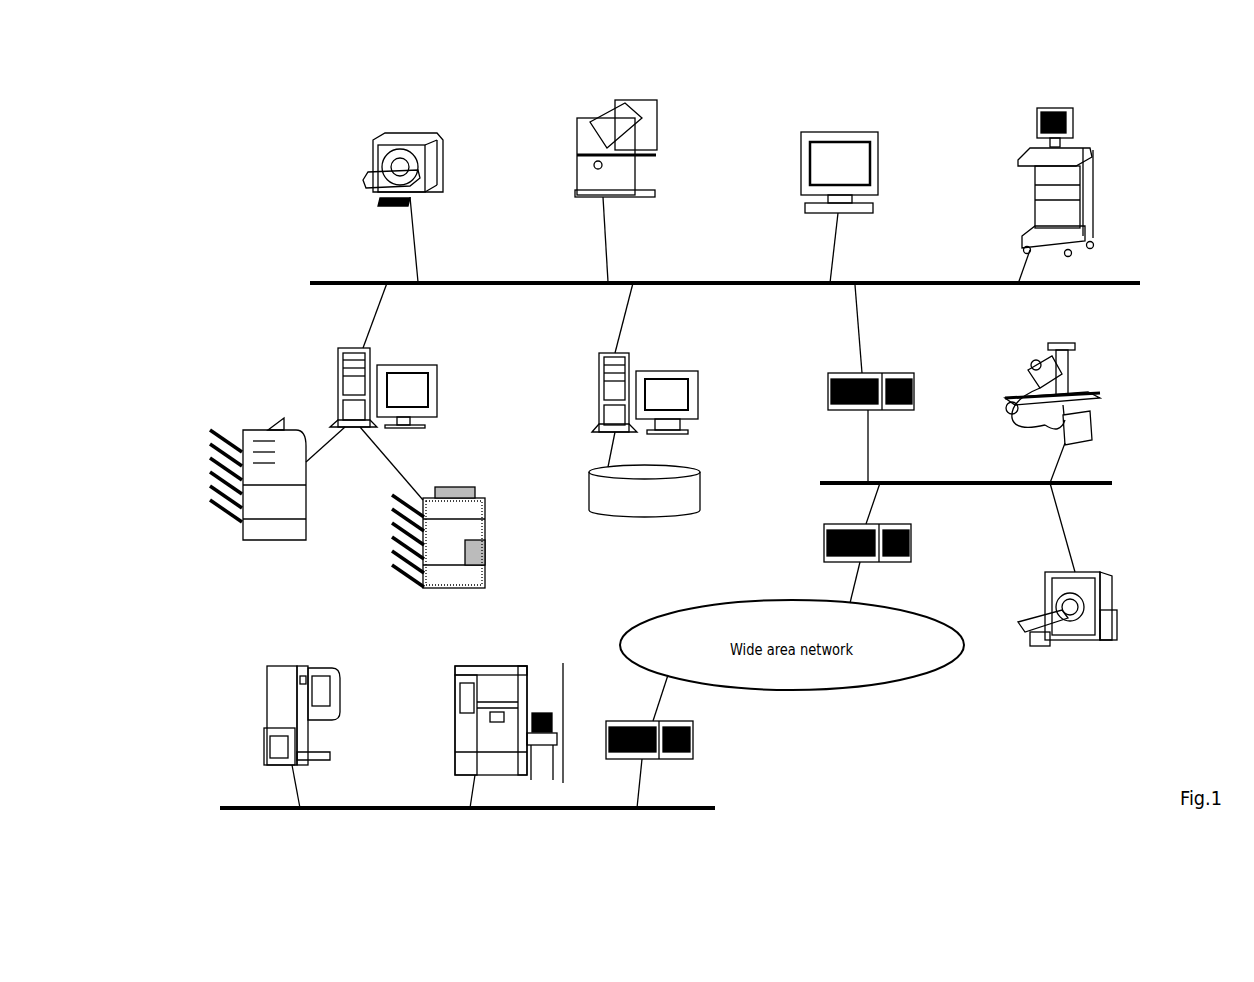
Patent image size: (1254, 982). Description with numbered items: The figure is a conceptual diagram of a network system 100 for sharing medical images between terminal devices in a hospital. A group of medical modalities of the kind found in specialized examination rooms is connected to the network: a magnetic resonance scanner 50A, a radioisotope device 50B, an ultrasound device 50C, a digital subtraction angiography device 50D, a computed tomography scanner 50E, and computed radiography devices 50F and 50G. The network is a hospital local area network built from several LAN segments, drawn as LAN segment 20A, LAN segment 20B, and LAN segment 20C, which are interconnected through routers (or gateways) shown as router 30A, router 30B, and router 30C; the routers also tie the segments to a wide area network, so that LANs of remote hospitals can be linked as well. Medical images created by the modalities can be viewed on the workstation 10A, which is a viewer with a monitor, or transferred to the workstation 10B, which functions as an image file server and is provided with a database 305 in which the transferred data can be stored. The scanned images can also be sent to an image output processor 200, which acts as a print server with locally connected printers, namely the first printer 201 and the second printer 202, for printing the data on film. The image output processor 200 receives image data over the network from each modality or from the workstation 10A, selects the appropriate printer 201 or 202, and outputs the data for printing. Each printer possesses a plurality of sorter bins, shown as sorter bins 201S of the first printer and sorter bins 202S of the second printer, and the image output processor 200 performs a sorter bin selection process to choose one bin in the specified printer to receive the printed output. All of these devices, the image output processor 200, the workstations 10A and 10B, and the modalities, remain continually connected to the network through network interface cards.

The network system 100 is at (1063, 874).
The workstation 10A is at (871, 173).
The workstation 10B is at (588, 375).
The LAN segment 20A is at (725, 272).
The LAN segment 20B is at (966, 471).
The LAN segment 20C is at (467, 823).
The router 30A is at (831, 384).
The router 30B is at (824, 543).
The router 30C is at (714, 741).
The database 305 is at (624, 505).
The magnetic resonance (MR) scanner 50A is at (419, 170).
The radioisotope (RI) device 50B is at (646, 174).
The ultrasound (US) device 50C is at (1065, 166).
The digital subtraction angiography (DSA) device 50D is at (1084, 399).
The computed tomography (CT) scanner 50E is at (1104, 564).
The computed radiography (CR) device 50F is at (514, 702).
The FCR imaging apparatus 50G is at (331, 712).
The image output processor 200 is at (304, 391).
The no. 1 printer 201 is at (235, 511).
The sorter bins 201S is at (204, 417).
The no. 2 printer 202 is at (489, 510).
The sorter bins 202S is at (384, 490).